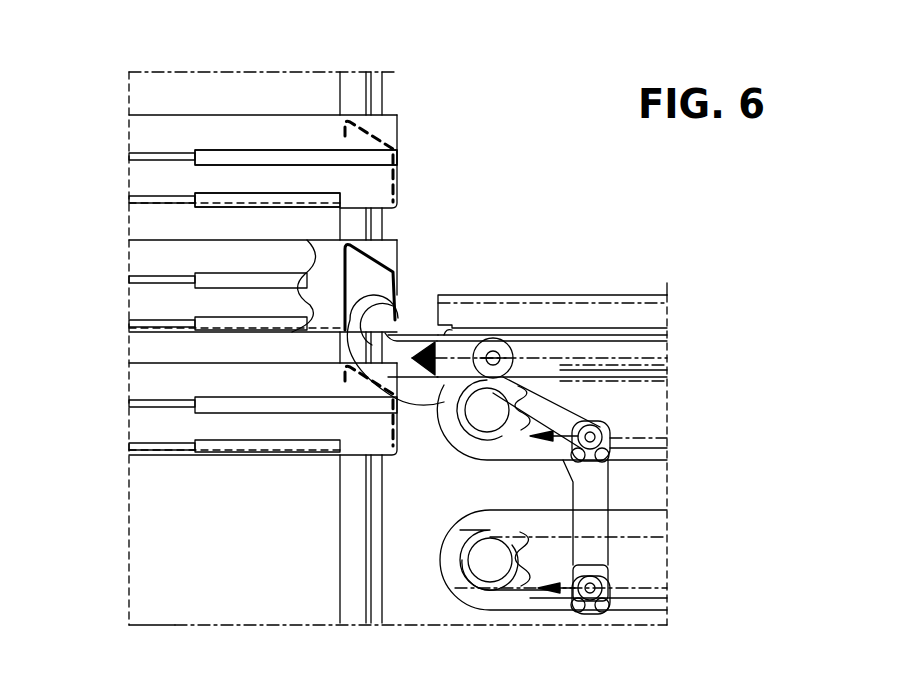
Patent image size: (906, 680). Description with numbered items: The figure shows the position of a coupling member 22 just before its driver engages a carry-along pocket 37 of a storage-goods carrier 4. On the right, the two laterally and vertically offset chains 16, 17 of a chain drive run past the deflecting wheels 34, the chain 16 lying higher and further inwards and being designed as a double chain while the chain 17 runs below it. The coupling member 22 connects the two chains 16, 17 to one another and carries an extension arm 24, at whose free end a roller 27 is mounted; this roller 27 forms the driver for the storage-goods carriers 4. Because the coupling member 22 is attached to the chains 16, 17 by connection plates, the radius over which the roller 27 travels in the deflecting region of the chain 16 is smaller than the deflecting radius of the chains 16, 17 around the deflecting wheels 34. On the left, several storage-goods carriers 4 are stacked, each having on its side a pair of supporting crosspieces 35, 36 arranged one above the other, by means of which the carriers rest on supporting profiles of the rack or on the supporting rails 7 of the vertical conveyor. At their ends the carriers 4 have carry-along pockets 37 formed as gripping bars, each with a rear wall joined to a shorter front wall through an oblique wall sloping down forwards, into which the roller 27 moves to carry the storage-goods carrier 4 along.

The storage-goods carrier 4 is at (165, 173).
The supporting rail 7 is at (610, 322).
The chain 16 is at (655, 363).
The chain 17 is at (653, 520).
The coupling member 22 is at (597, 495).
The extension arm 24 is at (560, 415).
The roller 27 is at (500, 345).
The deflecting wheel 34 is at (497, 440).
The supporting crosspiece 35 is at (245, 160).
The supporting crosspiece 36 is at (290, 203).
The carry-along pocket 37 is at (363, 280).